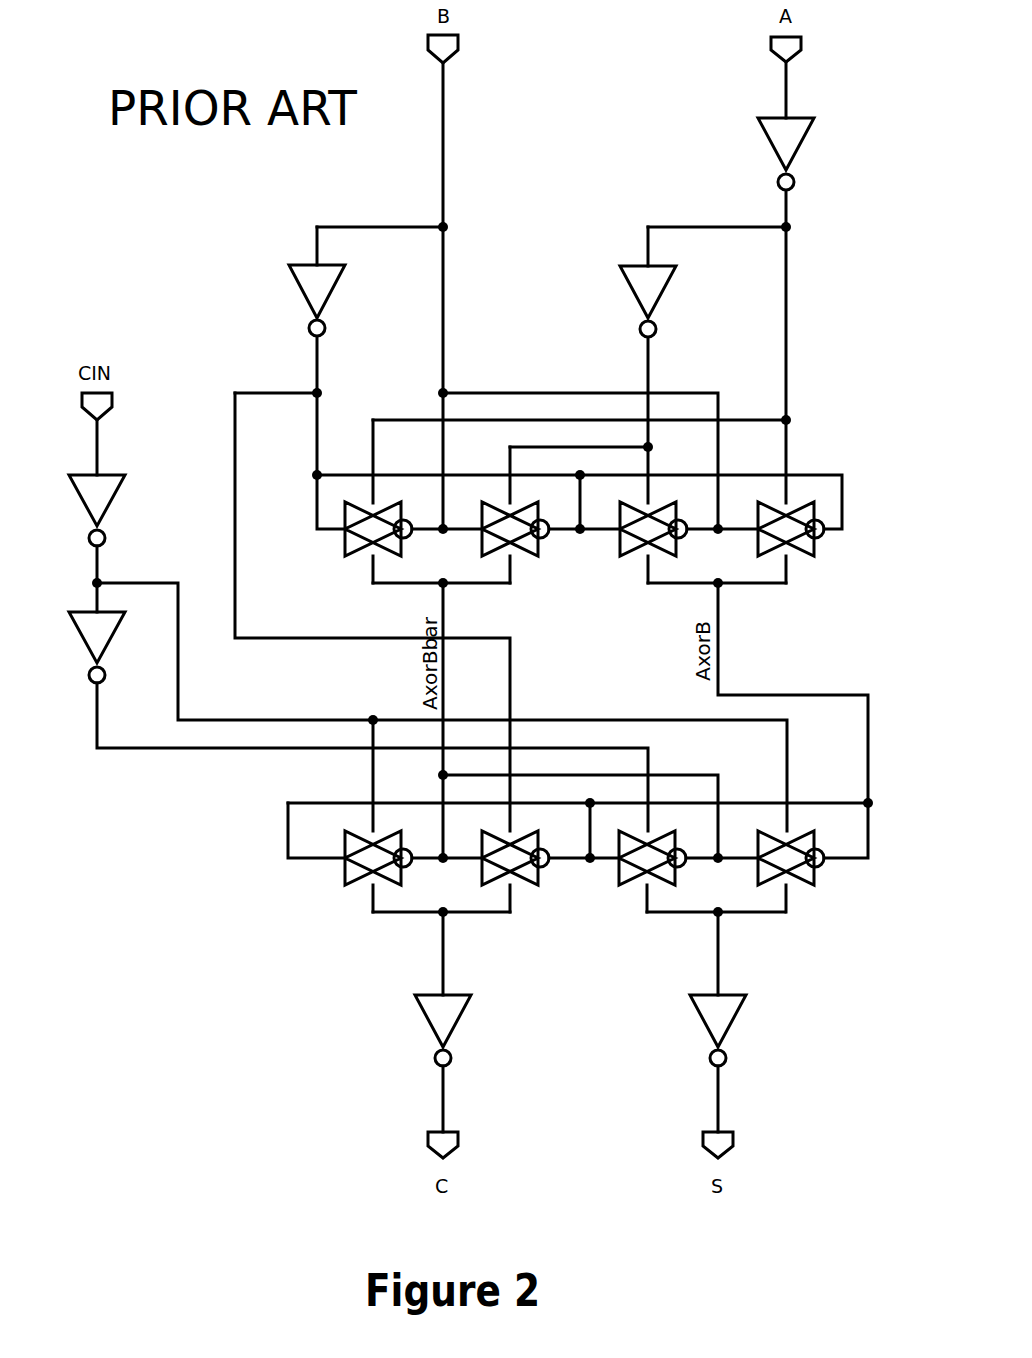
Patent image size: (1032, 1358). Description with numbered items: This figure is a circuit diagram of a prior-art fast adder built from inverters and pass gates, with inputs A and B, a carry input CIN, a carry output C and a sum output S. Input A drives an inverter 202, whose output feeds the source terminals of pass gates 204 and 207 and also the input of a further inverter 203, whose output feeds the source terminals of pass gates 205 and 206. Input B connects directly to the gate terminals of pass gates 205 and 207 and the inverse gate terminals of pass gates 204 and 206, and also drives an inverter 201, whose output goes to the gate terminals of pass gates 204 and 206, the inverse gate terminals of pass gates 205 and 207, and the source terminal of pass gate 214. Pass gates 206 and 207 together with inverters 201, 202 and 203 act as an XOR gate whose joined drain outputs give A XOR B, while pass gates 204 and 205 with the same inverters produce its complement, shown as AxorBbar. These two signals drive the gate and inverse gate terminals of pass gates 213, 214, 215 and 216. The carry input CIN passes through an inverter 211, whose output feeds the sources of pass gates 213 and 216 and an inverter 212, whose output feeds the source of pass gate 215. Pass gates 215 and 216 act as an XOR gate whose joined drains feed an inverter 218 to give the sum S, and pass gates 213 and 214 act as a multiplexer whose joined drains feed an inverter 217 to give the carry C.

The inverter 201 is at (301, 291).
The inverter 202 is at (801, 144).
The inverter 203 is at (631, 292).
The pass gate 204 is at (360, 557).
The pass gate 205 is at (528, 557).
The pass gate 206 is at (637, 557).
The pass gate 207 is at (807, 557).
The inverter 211 is at (82, 506).
The inverter 212 is at (77, 632).
The pass gate 213 is at (358, 886).
The pass gate 214 is at (523, 886).
The pass gate 215 is at (632, 886).
The pass gate 216 is at (810, 886).
The inverter 217 is at (462, 1010).
The inverter 218 is at (698, 1016).